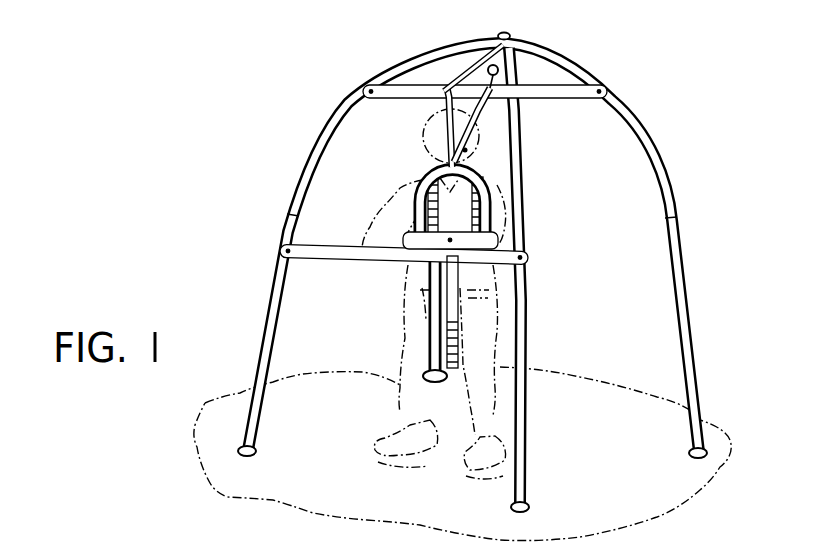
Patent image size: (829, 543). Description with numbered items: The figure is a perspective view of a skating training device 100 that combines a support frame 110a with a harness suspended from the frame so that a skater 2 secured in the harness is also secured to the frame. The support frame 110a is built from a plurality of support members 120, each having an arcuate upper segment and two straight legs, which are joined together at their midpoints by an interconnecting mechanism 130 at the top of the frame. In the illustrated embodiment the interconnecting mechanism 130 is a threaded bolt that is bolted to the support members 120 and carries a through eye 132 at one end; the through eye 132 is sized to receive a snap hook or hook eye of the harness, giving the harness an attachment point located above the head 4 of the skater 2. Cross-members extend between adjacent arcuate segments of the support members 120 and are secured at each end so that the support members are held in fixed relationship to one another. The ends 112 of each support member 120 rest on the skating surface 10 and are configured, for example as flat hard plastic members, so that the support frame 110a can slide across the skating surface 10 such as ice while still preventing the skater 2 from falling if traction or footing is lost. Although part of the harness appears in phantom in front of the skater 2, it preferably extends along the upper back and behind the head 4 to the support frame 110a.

The skating surface 10 is at (220, 490).
The skater 2 is at (382, 189).
The head 4 is at (415, 146).
The skating training device 100 is at (655, 66).
The support frame 110a is at (302, 72).
The ends 112 is at (225, 440).
The support members 120 is at (433, 65).
The interconnecting mechanism 130 is at (506, 39).
The through eye 132 is at (470, 50).